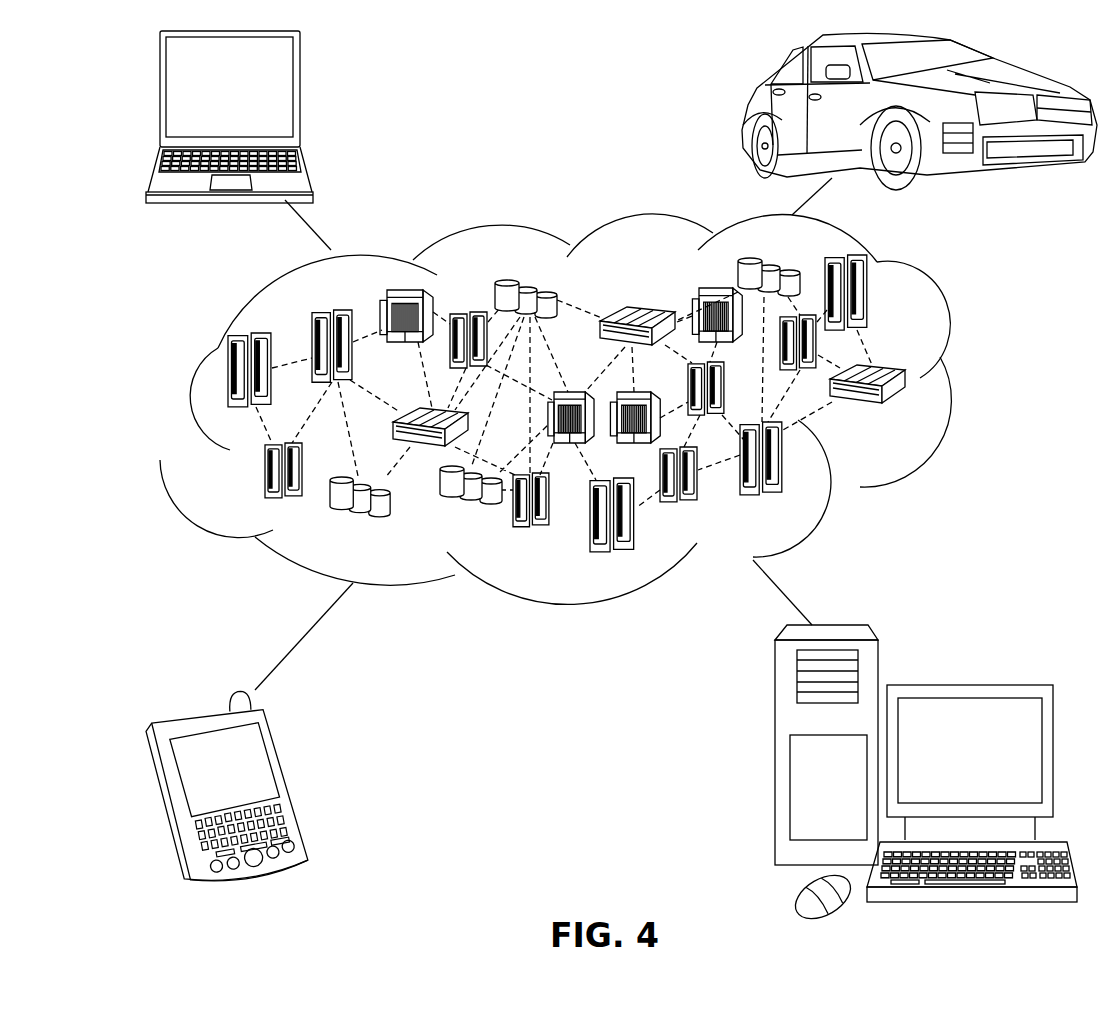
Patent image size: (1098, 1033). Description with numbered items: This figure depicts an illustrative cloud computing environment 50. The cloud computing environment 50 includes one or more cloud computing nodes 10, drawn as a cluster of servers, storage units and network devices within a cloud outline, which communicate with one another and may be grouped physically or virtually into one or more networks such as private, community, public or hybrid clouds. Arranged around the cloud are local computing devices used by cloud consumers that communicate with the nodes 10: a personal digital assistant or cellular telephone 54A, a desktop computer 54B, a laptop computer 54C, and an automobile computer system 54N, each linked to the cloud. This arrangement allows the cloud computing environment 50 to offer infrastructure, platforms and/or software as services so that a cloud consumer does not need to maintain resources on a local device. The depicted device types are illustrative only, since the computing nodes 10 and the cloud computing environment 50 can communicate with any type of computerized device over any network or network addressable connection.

The cloud computing node 10 is at (912, 415).
The cloud computing environment 50 is at (968, 383).
The personal digital assistant or cellular telephone 54A is at (290, 786).
The desktop computer 54B is at (968, 683).
The laptop computer 54C is at (300, 95).
The automobile computer system 54N is at (741, 110).